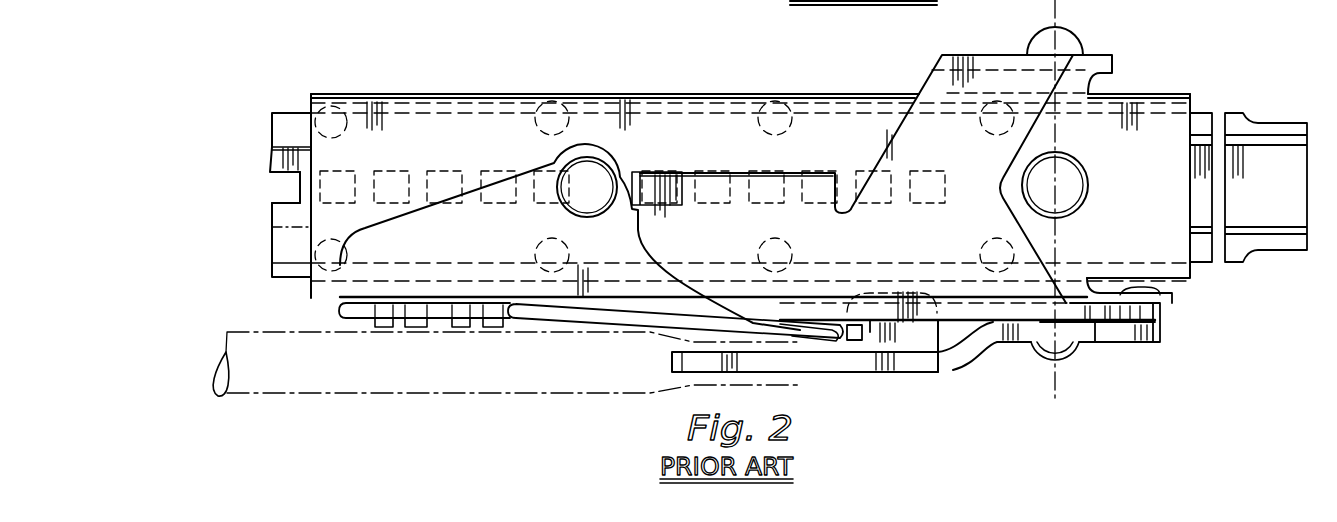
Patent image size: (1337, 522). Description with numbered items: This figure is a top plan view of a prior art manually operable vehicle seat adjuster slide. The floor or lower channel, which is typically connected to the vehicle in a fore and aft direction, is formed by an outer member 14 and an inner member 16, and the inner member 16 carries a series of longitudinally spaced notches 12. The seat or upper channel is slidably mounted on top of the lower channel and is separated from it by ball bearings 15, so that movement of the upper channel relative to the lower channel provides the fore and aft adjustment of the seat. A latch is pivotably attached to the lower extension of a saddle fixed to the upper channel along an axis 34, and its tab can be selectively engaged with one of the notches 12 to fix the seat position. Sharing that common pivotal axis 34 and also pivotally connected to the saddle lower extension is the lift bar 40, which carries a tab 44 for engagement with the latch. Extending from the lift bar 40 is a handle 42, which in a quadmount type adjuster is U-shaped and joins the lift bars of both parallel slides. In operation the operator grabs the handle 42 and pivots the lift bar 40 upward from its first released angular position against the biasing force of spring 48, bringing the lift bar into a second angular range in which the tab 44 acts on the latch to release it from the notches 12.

The notches 12 is at (283, 172).
The outer member 14 is at (271, 122).
The ball bearings 15 is at (774, 95).
The inner member 16 is at (270, 212).
The axis 34 is at (1057, 18).
The lift bar 40 is at (825, 368).
The handle 42 is at (555, 393).
The tab 44 is at (928, 334).
The spring 48 is at (853, 341).